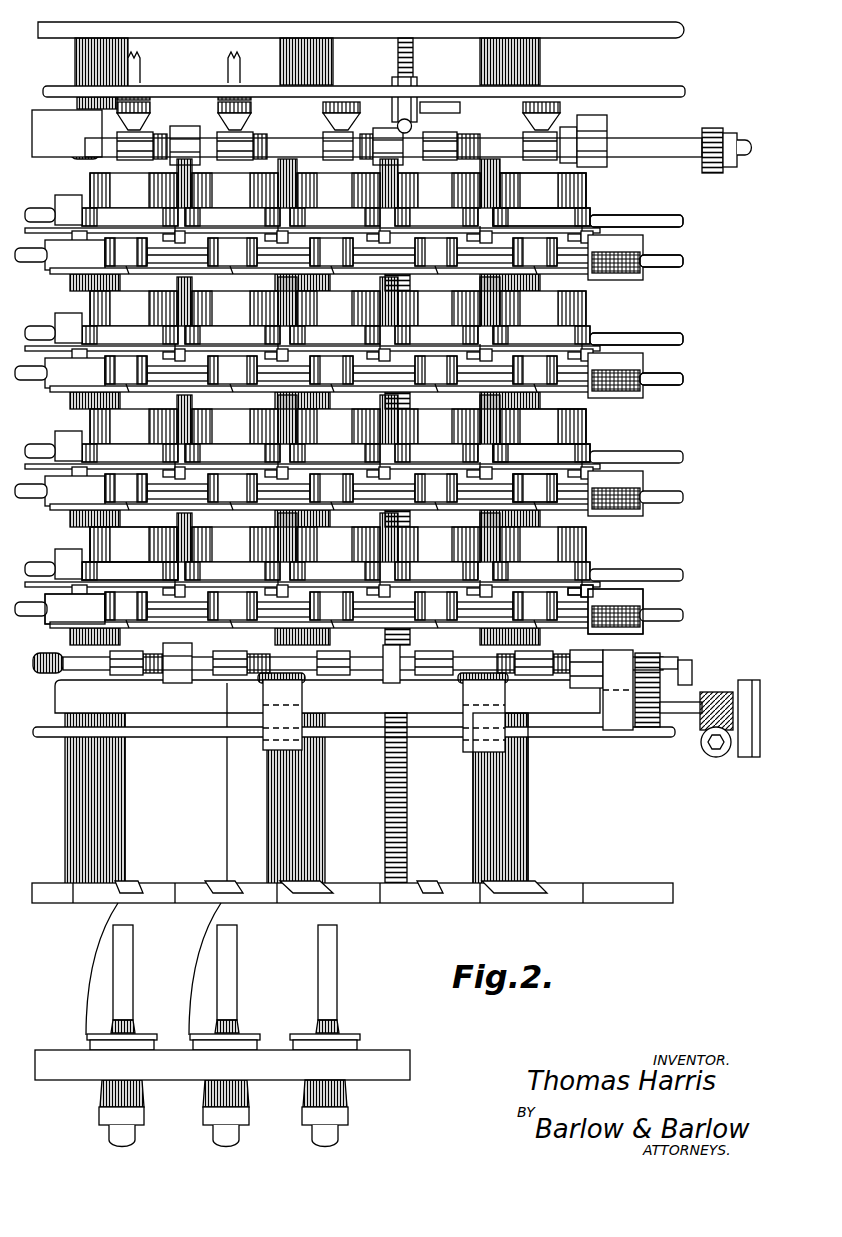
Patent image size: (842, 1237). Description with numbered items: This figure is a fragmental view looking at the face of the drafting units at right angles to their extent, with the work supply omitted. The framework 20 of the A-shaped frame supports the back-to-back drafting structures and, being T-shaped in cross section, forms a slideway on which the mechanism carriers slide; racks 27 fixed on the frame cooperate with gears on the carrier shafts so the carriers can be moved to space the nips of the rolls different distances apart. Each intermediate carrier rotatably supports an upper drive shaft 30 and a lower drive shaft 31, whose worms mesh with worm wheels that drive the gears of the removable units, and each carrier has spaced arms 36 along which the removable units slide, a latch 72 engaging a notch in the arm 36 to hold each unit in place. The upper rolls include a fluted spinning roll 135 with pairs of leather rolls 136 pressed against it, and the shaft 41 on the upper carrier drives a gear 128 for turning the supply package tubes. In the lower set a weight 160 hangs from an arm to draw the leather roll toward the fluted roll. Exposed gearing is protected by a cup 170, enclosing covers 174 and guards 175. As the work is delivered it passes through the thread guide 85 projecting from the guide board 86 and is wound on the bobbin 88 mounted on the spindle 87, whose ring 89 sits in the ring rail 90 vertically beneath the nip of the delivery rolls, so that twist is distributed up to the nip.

The framework 20 is at (532, 803).
The racks 27 is at (405, 798).
The upper drive shaft 30 is at (672, 221).
The lower drive shaft 31 is at (672, 260).
The spaced arms 36 is at (593, 597).
The shaft 41 is at (655, 140).
The latch 72 is at (577, 590).
The thread guide 85 is at (118, 885).
The guide board 86 is at (155, 890).
The spindle 87 is at (332, 1133).
The bobbin 88 is at (335, 978).
The ring 89 is at (343, 1038).
The ring rail 90 is at (382, 1058).
The gear 128 is at (712, 130).
The spinning roll 135 is at (160, 128).
The leather rolls 136 is at (433, 147).
The weight 160 is at (267, 740).
The cup 170 is at (585, 187).
The enclosing covers 174 is at (590, 213).
The guards 175 is at (520, 497).